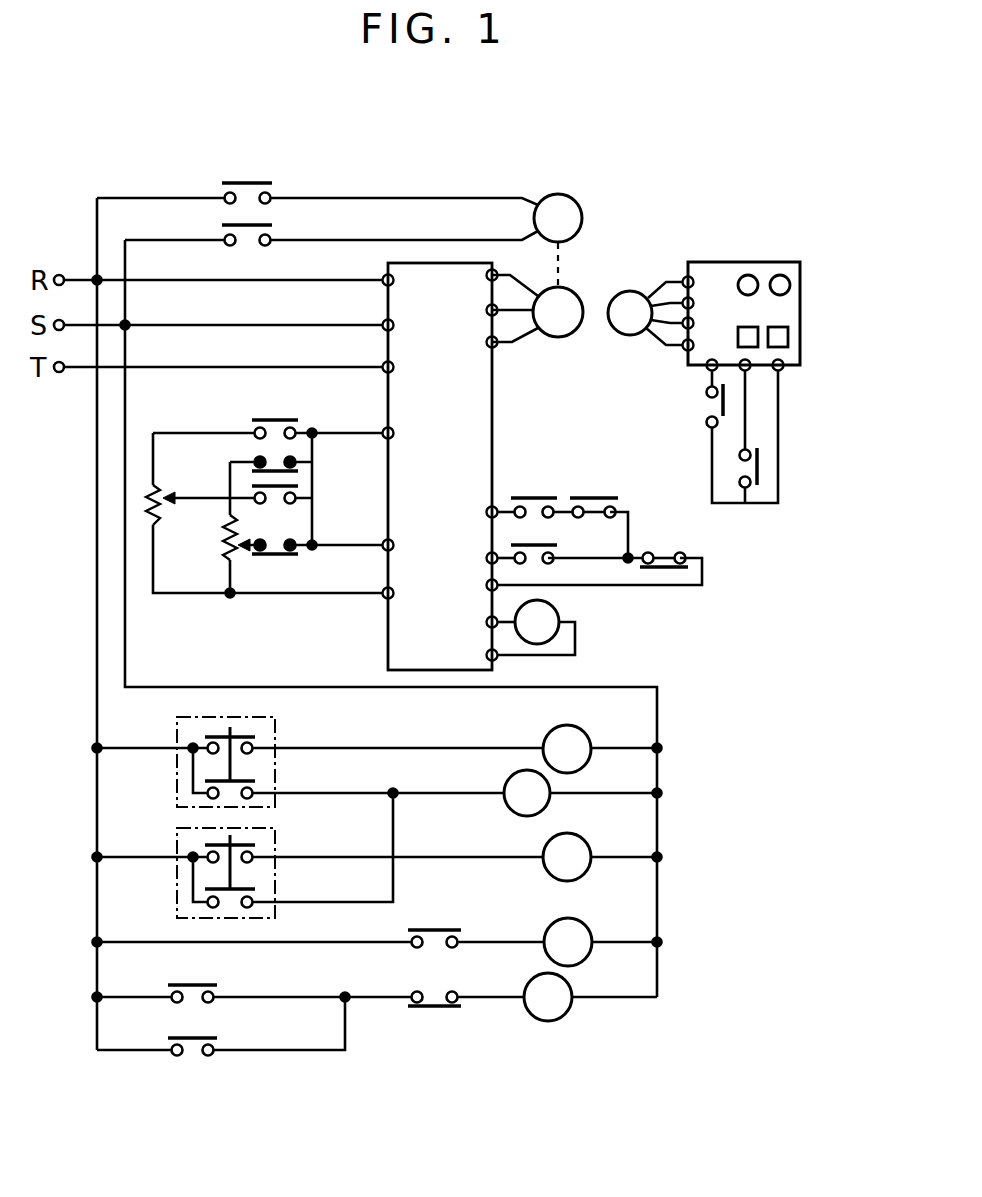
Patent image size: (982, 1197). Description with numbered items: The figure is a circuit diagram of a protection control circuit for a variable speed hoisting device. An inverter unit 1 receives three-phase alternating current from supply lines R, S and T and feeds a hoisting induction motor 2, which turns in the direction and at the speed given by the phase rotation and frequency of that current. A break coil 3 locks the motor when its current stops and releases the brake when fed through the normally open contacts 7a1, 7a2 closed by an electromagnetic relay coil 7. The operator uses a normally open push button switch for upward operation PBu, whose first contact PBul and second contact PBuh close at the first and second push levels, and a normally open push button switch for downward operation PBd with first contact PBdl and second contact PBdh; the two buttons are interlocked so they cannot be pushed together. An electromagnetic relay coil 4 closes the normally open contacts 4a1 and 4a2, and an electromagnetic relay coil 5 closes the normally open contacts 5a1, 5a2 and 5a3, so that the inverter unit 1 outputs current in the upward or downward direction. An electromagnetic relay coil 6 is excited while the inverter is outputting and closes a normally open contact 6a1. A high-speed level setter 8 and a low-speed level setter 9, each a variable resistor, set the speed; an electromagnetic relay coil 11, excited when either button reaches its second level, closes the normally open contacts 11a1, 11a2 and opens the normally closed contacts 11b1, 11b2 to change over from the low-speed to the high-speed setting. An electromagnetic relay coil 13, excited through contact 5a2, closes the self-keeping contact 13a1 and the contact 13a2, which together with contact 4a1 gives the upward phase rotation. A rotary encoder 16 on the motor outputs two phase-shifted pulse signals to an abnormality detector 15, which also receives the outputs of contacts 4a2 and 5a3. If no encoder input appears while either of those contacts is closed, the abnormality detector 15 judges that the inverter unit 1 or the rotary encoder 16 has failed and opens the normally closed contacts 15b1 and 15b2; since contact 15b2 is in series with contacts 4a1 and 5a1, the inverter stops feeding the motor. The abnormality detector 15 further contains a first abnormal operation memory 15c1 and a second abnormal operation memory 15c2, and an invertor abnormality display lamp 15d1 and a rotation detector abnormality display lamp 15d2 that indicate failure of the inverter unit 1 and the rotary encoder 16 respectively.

The inverter unit 1 is at (492, 384).
The hoisting induction motor 2 is at (575, 295).
The break coil 3 is at (578, 203).
The electromagnetic relay coil 4 is at (585, 733).
The electromagnetic relay coil 5 is at (585, 841).
The electromagnetic relay coil 6 is at (553, 605).
The electromagnetic relay coil 7 is at (586, 926).
The high-speed level setter 8 is at (157, 518).
The low-speed level setter 9 is at (224, 548).
The electromagnetic relay coil 11 is at (508, 777).
The electromagnetic relay coil 13 is at (568, 980).
The abnormality detector 15 is at (697, 262).
The rotary encoder 16 is at (633, 291).
The normally open contact 7a1 is at (250, 183).
The normally open contact 7a2 is at (250, 225).
The normally open contact 11a1 is at (265, 416).
The normally open contact 11a2 is at (252, 482).
The normally closed contact 11b1 is at (288, 472).
The normally closed contact 11b2 is at (282, 556).
The normally open contact 4a1 is at (523, 497).
The normally open contact 4a2 is at (703, 402).
The normally open contact 13a2 is at (586, 497).
The normally open contact 5a1 is at (540, 544).
The normally open contact 5a2 is at (195, 985).
The normally open contact 5a3 is at (740, 465).
The normally closed contact 15b1 is at (434, 1000).
The normally closed contact 15b2 is at (666, 568).
The first abnormal operation memory 15c1 is at (752, 347).
The second abnormal operation memory 15c2 is at (788, 340).
The invertor abnormality display lamp 15d1 is at (748, 275).
The rotation detector abnormality display lamp 15d2 is at (782, 275).
The normally open contact 6a1 is at (435, 930).
The normally open contact 13a1 is at (195, 1038).
The normally open push button switch for upward operation PBu is at (177, 730).
The normally open push button switch for downward operation PBd is at (177, 834).
The first contact PBul is at (250, 736).
The second contact PBuh is at (250, 781).
The first contact PBdl is at (250, 843).
The second contact PBdh is at (250, 889).